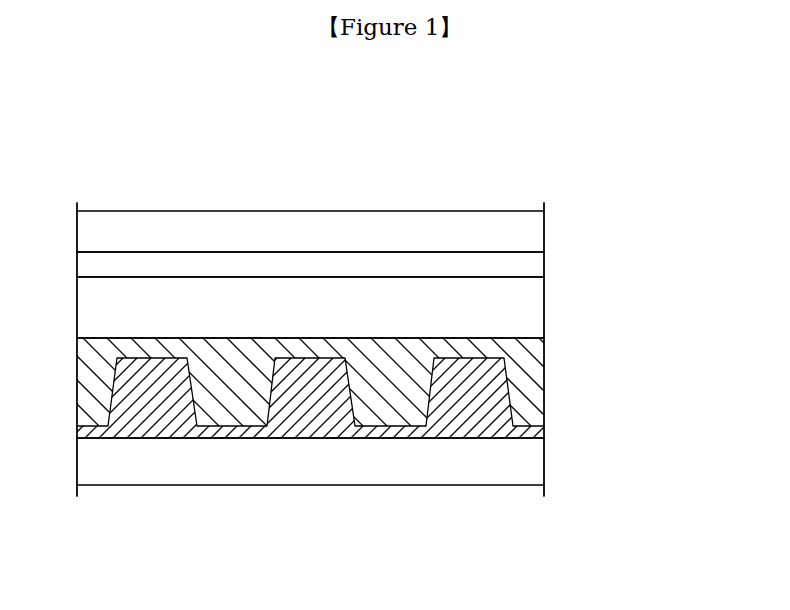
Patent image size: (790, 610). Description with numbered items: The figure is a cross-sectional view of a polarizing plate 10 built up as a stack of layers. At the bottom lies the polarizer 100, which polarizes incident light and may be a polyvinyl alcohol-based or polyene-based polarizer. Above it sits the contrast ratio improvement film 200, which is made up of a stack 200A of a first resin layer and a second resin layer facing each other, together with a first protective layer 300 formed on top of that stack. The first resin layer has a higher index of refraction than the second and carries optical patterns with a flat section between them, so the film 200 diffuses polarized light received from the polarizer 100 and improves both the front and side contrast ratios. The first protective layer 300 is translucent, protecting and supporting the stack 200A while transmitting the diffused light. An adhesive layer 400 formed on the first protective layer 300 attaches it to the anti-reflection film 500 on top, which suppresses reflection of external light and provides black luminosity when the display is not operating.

The polarizing plate 10 is at (588, 158).
The polarizer 100 is at (536, 465).
The contrast ratio improvement film 200 is at (622, 308).
The stack of first resin layer and second resin layer 200A is at (536, 382).
The first protective layer 300 is at (536, 305).
The adhesive layer 400 is at (536, 263).
The anti-reflection film 500 is at (536, 228).